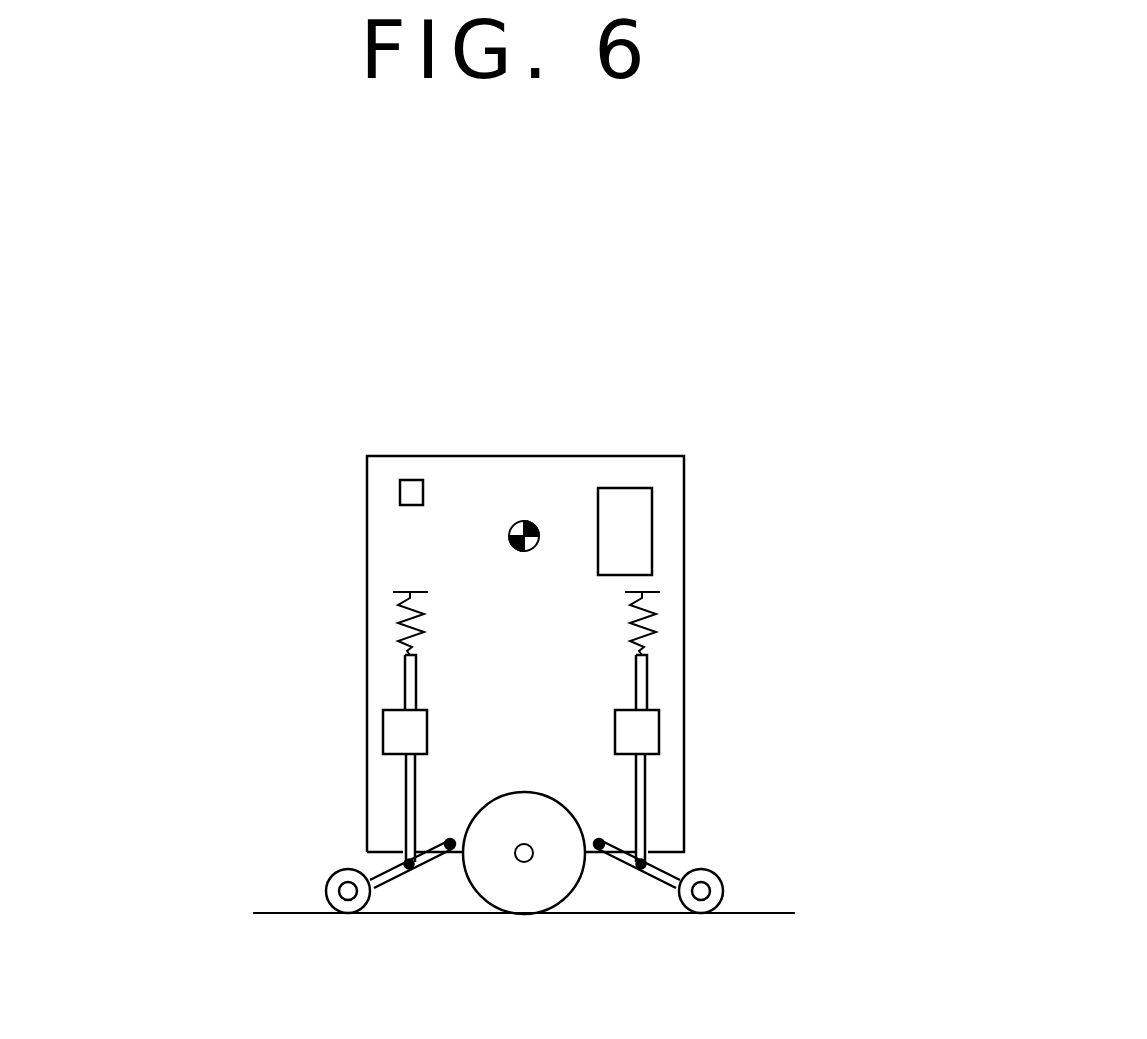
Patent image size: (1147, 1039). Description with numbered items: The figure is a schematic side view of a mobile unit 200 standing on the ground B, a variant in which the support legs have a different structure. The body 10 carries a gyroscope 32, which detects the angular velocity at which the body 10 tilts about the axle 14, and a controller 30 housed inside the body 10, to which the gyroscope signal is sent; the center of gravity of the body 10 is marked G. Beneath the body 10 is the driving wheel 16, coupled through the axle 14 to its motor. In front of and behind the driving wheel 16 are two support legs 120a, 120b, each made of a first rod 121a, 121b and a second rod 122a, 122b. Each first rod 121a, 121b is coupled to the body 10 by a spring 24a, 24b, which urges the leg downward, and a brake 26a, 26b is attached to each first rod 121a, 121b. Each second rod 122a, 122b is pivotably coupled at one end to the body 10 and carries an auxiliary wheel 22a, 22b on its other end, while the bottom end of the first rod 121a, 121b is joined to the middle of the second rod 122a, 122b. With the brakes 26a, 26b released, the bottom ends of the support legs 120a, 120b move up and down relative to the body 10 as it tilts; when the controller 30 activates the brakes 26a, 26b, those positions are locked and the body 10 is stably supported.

The mobile unit 200 is at (823, 325).
The body 10 is at (550, 455).
The gyroscope 32 is at (412, 485).
The controller 30 is at (633, 523).
The center of gravity G is at (509, 538).
The spring 24b is at (398, 610).
The spring 24a is at (655, 610).
The brake 26b is at (402, 735).
The brake 26a is at (650, 735).
The support leg 120b is at (185, 780).
The support leg 120a is at (865, 780).
The first rod 121b is at (403, 829).
The first rod 121a is at (648, 829).
The second rod 122b is at (397, 866).
The second rod 122a is at (652, 866).
The auxiliary wheel 22b is at (327, 898).
The auxiliary wheel 22a is at (717, 895).
The driving wheel 16 is at (545, 882).
The axle 14 is at (525, 862).
The ground B is at (795, 913).